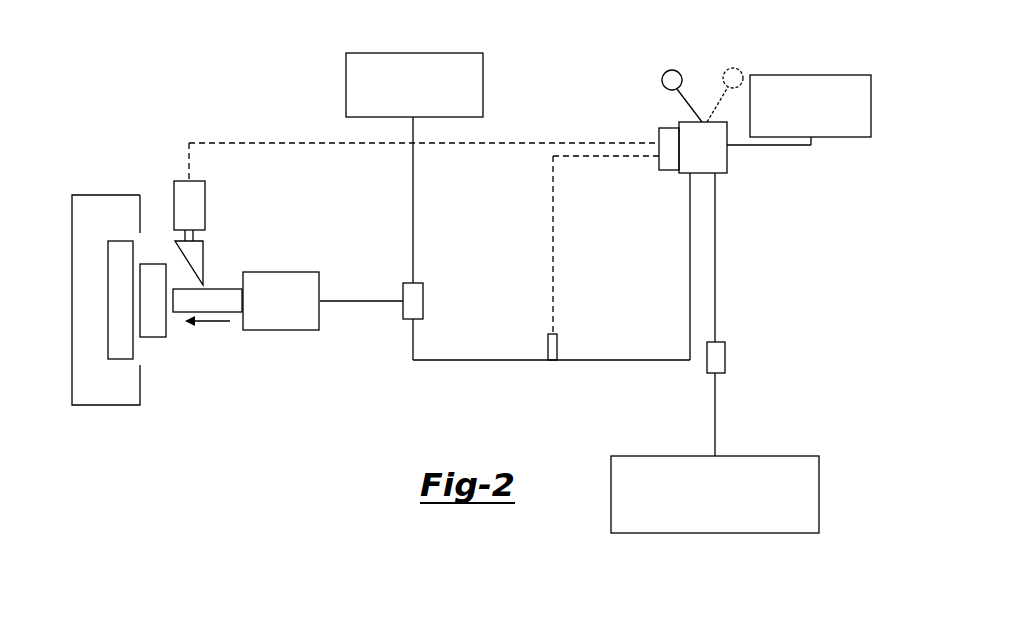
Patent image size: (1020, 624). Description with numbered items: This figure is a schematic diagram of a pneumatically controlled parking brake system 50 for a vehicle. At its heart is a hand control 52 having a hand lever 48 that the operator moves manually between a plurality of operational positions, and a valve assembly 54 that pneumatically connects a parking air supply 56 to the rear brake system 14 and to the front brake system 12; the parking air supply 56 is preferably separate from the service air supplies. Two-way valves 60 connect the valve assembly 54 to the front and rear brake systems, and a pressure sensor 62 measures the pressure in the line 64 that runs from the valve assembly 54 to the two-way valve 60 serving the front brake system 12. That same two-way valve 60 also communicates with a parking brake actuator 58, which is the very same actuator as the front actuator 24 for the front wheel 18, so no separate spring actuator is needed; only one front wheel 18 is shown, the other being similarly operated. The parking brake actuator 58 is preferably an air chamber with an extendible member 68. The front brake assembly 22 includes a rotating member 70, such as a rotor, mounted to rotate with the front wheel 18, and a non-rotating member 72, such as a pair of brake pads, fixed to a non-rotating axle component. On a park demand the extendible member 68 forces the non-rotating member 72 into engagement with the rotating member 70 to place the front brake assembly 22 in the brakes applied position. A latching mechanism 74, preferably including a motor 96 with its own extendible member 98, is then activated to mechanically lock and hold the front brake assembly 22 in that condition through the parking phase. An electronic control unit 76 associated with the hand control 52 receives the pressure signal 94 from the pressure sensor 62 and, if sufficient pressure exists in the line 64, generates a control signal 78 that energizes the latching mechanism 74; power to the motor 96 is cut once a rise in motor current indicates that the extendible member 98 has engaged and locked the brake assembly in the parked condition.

The front brake system 12 is at (453, 53).
The rear brake system 14 is at (611, 465).
The front wheel 18 is at (122, 203).
The front brake assembly 22 is at (167, 365).
The front actuator 24 is at (308, 343).
The hand lever 48 is at (670, 70).
The parking brake system 50 is at (607, 100).
The hand control 52 is at (742, 163).
The valve assembly 54 is at (687, 165).
The parking air supply 56 is at (818, 75).
The parking brake actuator 58 is at (297, 272).
The two-way valve 60 is at (423, 303).
The pressure sensor 62 is at (557, 348).
The line 64 is at (602, 360).
The extendible member 68 is at (223, 303).
The rotating member 70 is at (131, 310).
The non-rotating member 72 is at (163, 310).
The latching mechanism 74 is at (217, 183).
The electronic control unit 76 is at (653, 163).
The control signal 78 is at (245, 143).
The pressure signal 94 is at (553, 239).
The motor 96 is at (202, 218).
The extendible member 98 is at (203, 247).